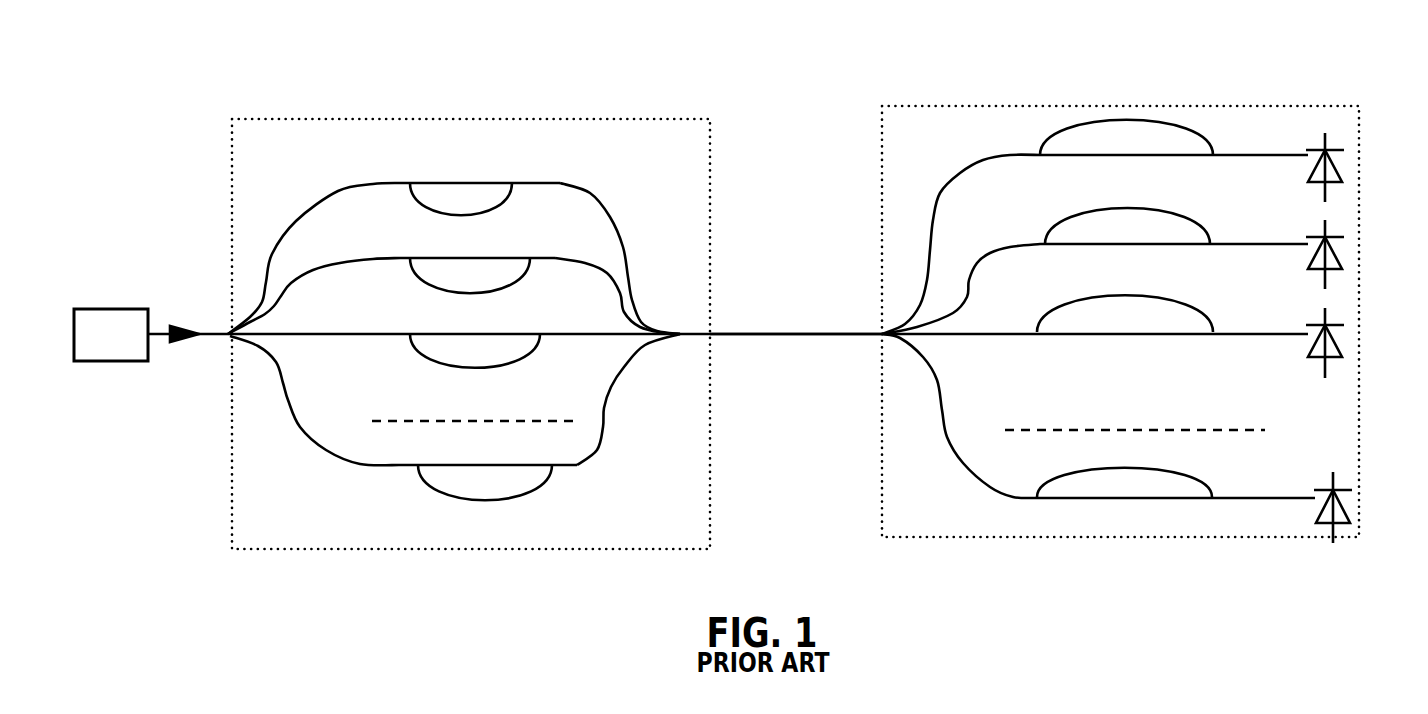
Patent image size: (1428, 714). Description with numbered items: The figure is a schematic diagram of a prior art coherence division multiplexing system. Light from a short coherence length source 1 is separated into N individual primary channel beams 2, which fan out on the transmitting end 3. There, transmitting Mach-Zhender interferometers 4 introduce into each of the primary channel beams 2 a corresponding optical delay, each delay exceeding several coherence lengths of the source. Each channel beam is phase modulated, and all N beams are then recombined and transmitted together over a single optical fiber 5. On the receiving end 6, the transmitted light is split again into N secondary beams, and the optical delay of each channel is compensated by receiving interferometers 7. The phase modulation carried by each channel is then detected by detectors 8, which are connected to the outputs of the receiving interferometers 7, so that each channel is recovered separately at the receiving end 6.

The short coherence length source 1 is at (111, 319).
The primary channel beams 2 is at (340, 188).
The transmitting end 3 is at (471, 334).
The transmitting Mach-Zhender interferometers 4 is at (527, 487).
The optical fiber 5 is at (796, 328).
The receiving end 6 is at (1120, 321).
The receiving interferometers 7 is at (1173, 485).
The detectors 8 is at (1347, 482).